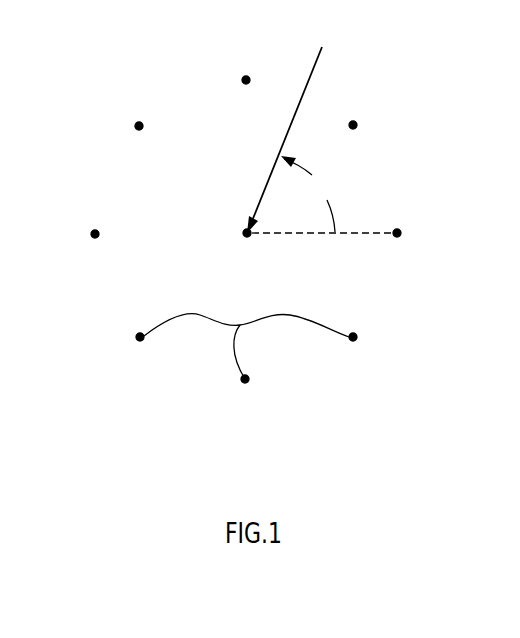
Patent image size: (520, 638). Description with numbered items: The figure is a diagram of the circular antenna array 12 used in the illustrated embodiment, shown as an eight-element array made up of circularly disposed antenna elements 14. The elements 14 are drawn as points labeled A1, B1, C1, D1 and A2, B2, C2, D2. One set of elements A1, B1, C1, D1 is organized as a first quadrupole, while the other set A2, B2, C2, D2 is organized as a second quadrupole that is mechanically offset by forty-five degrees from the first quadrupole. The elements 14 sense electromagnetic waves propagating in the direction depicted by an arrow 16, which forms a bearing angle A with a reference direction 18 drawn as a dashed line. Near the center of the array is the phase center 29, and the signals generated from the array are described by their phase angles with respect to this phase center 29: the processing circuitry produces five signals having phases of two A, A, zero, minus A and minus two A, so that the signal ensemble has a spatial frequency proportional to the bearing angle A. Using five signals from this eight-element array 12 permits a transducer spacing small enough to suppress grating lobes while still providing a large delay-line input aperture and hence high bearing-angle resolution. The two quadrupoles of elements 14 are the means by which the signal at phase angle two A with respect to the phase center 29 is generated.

The antenna array 12 is at (350, 94).
The antenna elements 14 is at (240, 323).
The arrow 16 is at (315, 70).
The reference direction 18 is at (292, 235).
The phase center 29 is at (243, 238).
The angle A is at (308, 194).
The antenna element A1 is at (248, 68).
The antenna element A2 is at (123, 127).
The antenna element B1 is at (79, 236).
The antenna element B2 is at (121, 339).
The antenna element C1 is at (245, 393).
The antenna element C2 is at (368, 339).
The antenna element D1 is at (411, 234).
The antenna element D2 is at (368, 126).